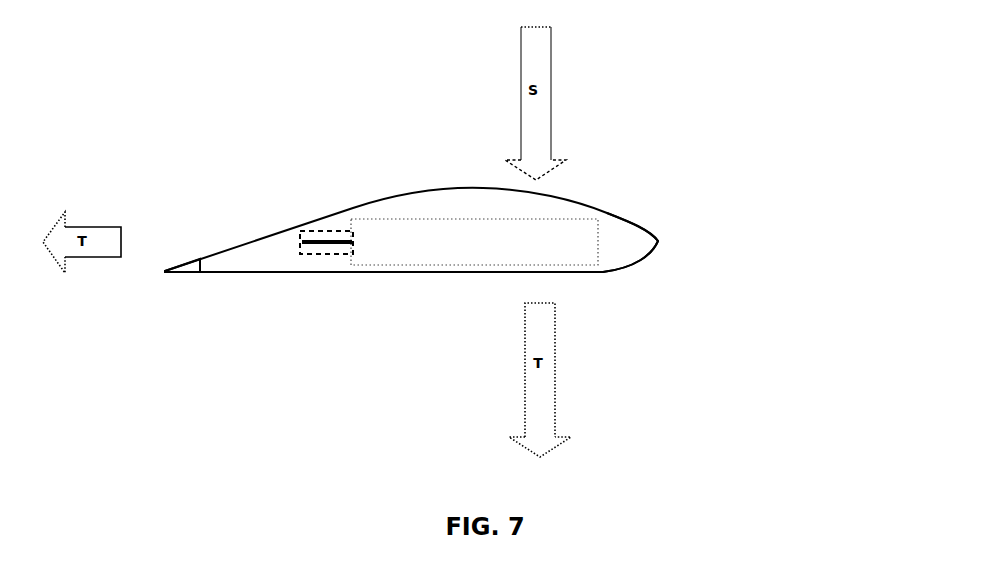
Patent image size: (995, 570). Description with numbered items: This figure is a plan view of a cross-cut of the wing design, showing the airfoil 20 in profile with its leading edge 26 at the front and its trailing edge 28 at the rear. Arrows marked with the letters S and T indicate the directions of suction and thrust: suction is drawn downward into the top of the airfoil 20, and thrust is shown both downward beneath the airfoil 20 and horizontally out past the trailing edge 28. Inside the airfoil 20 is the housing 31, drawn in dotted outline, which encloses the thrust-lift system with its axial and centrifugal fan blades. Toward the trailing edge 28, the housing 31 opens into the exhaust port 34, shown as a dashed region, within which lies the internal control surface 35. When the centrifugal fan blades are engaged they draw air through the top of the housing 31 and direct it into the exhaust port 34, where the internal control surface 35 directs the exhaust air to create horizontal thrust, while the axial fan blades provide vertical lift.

The airfoil 20 is at (576, 186).
The leading edge 26 is at (658, 241).
The trailing edge 28 is at (168, 271).
The housing 31 is at (573, 238).
The exhaust port 34 is at (315, 224).
The internal control surface 35 is at (326, 250).